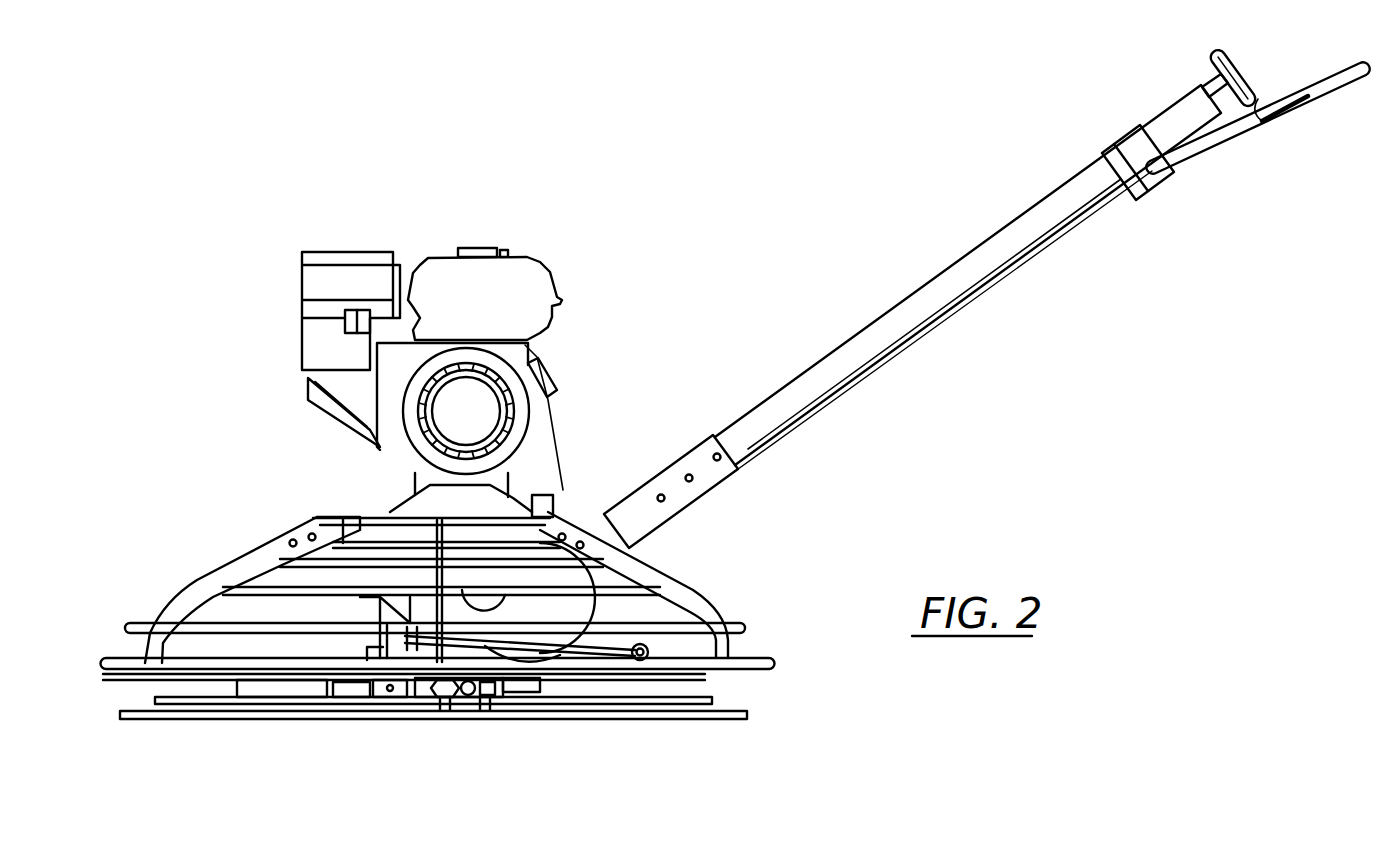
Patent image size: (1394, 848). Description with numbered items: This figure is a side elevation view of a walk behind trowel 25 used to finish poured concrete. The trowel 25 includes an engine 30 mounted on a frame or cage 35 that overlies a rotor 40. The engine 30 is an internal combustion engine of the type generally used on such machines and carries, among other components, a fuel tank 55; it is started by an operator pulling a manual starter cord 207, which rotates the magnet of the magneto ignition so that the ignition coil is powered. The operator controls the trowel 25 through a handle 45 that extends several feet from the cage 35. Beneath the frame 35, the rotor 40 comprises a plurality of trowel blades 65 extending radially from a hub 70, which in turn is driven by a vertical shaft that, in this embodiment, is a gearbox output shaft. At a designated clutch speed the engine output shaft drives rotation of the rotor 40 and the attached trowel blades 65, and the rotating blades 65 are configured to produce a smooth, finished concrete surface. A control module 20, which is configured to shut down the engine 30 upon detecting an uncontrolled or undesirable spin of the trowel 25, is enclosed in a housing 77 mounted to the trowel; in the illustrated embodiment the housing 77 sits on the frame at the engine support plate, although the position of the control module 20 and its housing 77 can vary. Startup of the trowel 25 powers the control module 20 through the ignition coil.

The walk behind trowel 25 is at (597, 163).
The engine 30 is at (568, 273).
The fuel tank 55 is at (438, 257).
The manual starter cord 207 is at (553, 378).
The control module 20 is at (545, 476).
The housing 77 is at (553, 508).
The handle 45 is at (1200, 160).
The frame 35 is at (690, 586).
The trowel blades 65 is at (243, 722).
The rotor 40 is at (440, 728).
The hub 70 is at (482, 712).